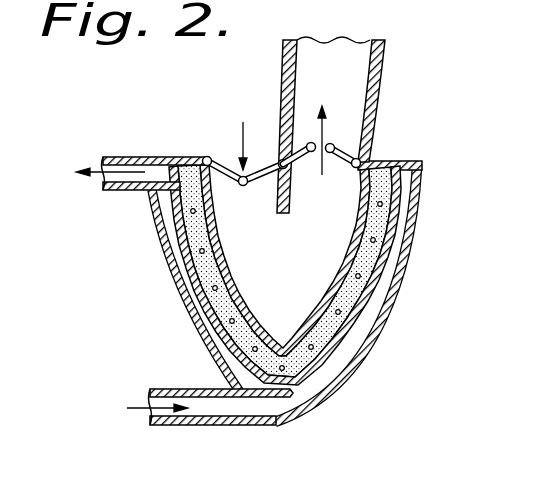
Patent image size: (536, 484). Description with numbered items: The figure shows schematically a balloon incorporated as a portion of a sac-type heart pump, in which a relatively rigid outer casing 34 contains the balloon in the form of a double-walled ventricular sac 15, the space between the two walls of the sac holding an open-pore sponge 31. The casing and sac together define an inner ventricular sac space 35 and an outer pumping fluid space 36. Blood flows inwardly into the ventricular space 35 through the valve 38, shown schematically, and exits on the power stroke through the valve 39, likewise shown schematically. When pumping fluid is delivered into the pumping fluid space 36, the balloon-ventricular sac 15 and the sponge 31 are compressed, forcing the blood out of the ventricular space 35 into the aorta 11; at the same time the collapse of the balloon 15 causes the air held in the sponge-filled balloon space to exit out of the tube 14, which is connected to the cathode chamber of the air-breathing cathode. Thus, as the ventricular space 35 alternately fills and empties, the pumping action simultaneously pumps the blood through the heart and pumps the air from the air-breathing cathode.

The aorta 11 is at (373, 98).
The tube 14 is at (115, 192).
The double-walled ventricular sac 15 is at (384, 289).
The sponge 31 is at (384, 256).
The outer casing 34 is at (358, 349).
The inner ventricular sac space 35 is at (298, 284).
The outer pumping fluid space 36 is at (288, 414).
The valve 38 is at (240, 188).
The valve 39 is at (343, 162).